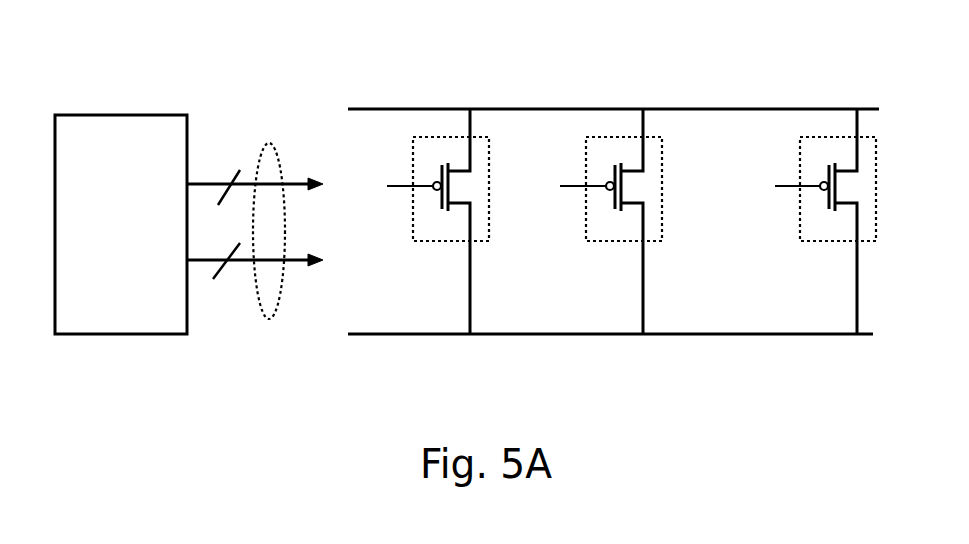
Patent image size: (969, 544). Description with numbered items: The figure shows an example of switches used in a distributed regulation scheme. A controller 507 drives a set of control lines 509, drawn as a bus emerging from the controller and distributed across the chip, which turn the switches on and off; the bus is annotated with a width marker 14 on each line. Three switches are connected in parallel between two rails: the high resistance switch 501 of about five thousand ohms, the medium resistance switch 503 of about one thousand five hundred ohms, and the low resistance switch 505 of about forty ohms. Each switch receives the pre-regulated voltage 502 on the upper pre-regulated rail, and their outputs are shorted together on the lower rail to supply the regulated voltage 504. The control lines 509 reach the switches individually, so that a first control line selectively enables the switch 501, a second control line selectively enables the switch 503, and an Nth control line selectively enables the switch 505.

The controller 507 is at (108, 334).
The control lines 509 is at (268, 143).
The control signal lines 14 is at (255, 218).
The pre-regulated voltage 502 is at (552, 108).
The regulated voltage 504 is at (508, 336).
The high resistance switch 501 is at (420, 241).
The medium resistance switch 503 is at (597, 241).
The low resistance switch 505 is at (812, 241).